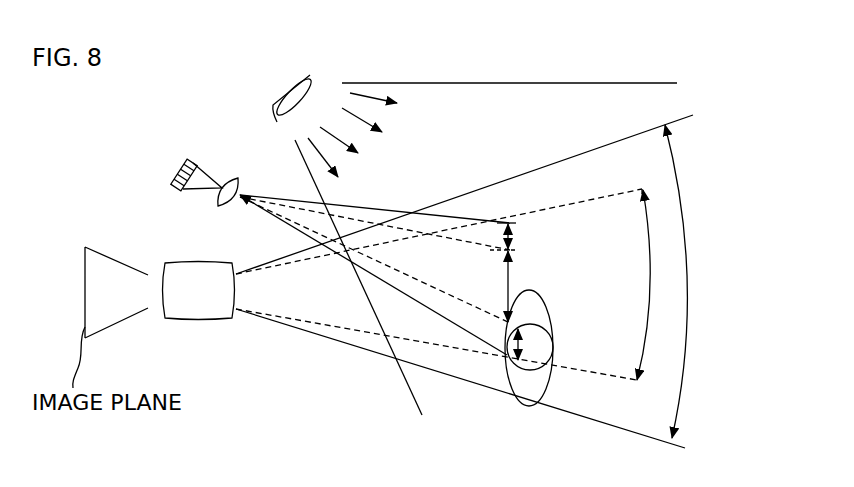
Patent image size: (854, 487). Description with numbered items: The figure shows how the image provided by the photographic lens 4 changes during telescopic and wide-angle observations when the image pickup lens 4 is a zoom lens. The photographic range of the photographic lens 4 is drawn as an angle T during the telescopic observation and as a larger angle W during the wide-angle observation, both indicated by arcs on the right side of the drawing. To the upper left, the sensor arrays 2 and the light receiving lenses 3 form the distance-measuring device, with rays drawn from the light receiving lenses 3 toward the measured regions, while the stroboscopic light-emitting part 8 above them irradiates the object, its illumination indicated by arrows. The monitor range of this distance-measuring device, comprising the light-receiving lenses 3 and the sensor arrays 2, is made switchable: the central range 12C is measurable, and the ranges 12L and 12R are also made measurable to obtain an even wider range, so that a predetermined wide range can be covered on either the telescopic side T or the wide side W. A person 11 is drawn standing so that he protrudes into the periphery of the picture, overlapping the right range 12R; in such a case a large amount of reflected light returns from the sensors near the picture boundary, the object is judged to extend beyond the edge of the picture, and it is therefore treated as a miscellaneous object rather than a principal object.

The sensor arrays 2 is at (190, 157).
The light receiving lenses 3 is at (237, 176).
The photographic lens 4 is at (193, 313).
The light-emitting part 8 is at (310, 73).
The person 11 is at (530, 407).
The left monitor range 12L is at (524, 237).
The central monitor range 12C is at (534, 286).
The right monitor range 12R is at (528, 338).
The telescopic angle T is at (657, 285).
The wide angle W is at (693, 281).